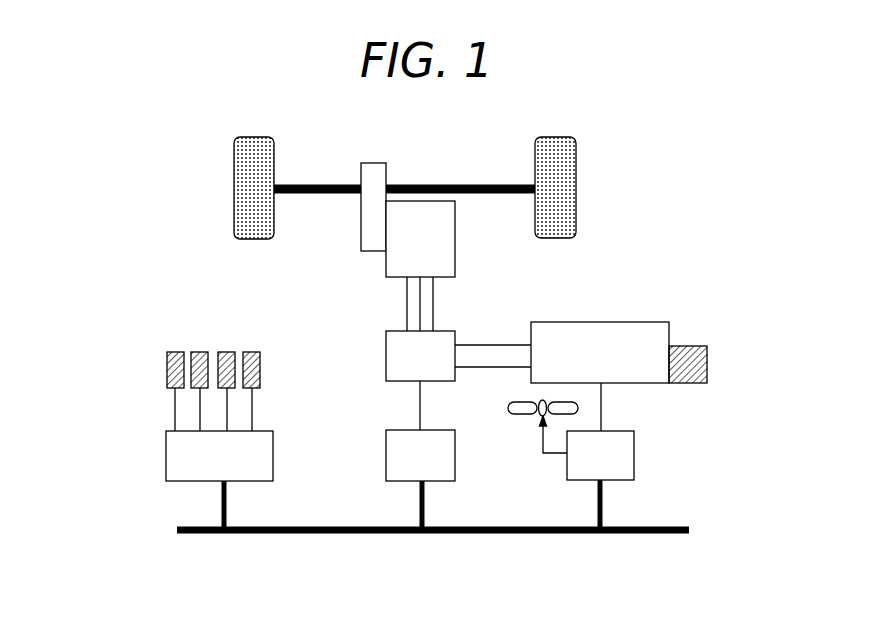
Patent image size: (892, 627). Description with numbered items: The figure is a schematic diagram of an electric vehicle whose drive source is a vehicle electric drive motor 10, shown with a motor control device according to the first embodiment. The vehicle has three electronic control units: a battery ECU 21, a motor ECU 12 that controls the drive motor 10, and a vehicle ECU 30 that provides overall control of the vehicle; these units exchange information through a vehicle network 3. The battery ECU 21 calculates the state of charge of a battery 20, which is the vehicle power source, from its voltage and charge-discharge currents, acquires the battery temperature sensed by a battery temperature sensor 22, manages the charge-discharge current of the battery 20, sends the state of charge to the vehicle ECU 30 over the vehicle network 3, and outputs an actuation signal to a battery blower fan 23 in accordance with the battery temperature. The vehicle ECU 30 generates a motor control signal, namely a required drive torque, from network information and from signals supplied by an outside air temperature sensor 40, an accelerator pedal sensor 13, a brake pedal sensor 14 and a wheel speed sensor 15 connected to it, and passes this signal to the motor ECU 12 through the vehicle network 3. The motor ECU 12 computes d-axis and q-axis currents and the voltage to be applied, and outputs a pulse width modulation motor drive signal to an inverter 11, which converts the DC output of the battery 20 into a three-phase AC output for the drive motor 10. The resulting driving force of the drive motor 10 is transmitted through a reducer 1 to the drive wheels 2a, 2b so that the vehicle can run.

The reducer 1 is at (380, 170).
The drive wheel 2a is at (576, 190).
The drive wheel 2b is at (234, 181).
The vehicle network 3 is at (680, 532).
The vehicle electric drive motor 10 is at (393, 265).
The inverter 11 is at (388, 356).
The motor ECU 12 is at (387, 456).
The accelerator pedal sensor 13 is at (257, 351).
The brake pedal sensor 14 is at (228, 351).
The wheel speed sensor 15 is at (200, 351).
The battery 20 is at (663, 332).
The battery ECU 21 is at (630, 455).
The battery temperature sensor 22 is at (705, 360).
The battery blower fan 23 is at (517, 413).
The vehicle ECU 30 is at (168, 457).
The outside air temperature sensor 40 is at (167, 372).